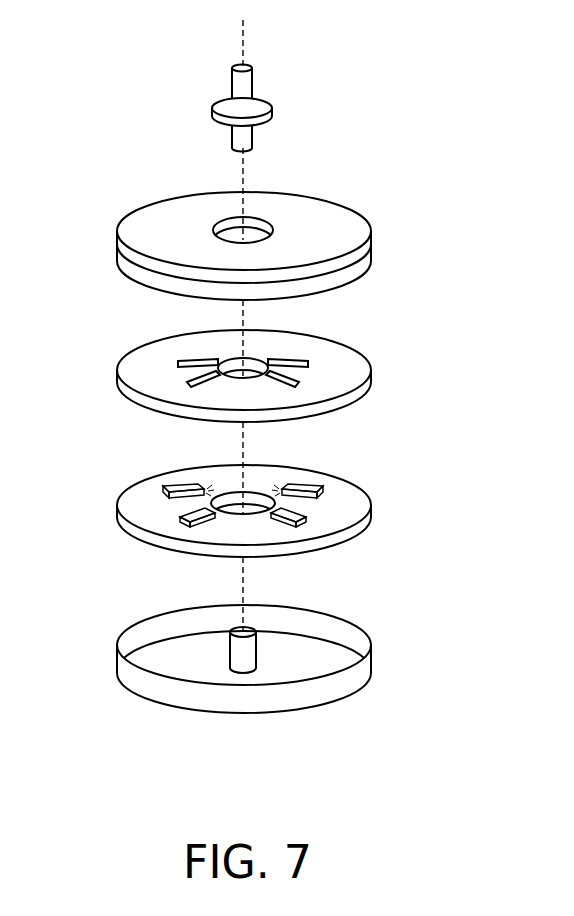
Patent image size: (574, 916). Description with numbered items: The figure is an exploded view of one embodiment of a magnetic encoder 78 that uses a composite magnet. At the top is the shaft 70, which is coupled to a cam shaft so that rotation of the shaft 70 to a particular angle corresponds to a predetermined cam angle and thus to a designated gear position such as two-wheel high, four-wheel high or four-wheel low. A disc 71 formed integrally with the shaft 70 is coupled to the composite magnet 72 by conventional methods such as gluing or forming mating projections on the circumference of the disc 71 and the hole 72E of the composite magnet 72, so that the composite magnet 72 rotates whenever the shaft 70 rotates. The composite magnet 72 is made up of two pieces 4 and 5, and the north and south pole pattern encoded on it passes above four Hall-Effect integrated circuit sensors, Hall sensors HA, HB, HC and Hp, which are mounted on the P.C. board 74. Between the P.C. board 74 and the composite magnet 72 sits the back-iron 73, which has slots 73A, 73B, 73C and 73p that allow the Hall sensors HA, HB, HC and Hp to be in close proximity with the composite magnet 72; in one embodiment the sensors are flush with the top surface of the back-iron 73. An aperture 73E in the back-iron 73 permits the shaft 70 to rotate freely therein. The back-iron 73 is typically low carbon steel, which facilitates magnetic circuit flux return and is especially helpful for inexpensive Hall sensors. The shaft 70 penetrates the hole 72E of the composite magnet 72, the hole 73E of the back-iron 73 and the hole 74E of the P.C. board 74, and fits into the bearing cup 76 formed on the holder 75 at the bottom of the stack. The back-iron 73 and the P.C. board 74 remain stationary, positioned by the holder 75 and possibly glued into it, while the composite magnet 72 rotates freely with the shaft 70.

The encoder 78 is at (116, 146).
The shaft 70 is at (246, 62).
The disc 71 is at (273, 105).
The composite magnet 72 is at (293, 229).
The piece 4 is at (360, 210).
The piece 5 is at (370, 248).
The hole 72E is at (258, 219).
The back-iron 73 is at (245, 381).
The slot 73A is at (178, 361).
The slot 73B is at (188, 383).
The slot 73C is at (298, 383).
The slot 73p is at (310, 362).
The aperture 73E is at (262, 361).
The P.C. board 74 is at (259, 506).
The hole 74E is at (233, 492).
The Hall sensor HA is at (170, 487).
The Hall sensor HB is at (180, 518).
The Hall sensor HC is at (306, 518).
The Hall sensor Hp is at (318, 488).
The holder 75 is at (372, 659).
The bearing cup 76 is at (252, 650).